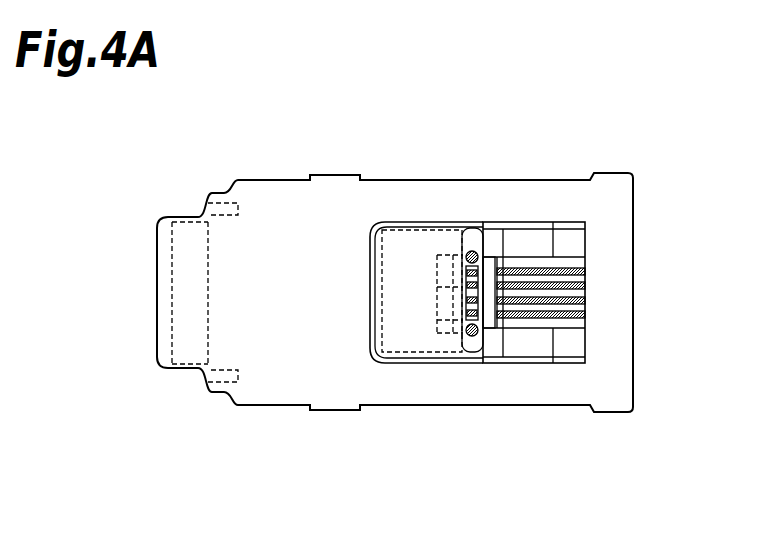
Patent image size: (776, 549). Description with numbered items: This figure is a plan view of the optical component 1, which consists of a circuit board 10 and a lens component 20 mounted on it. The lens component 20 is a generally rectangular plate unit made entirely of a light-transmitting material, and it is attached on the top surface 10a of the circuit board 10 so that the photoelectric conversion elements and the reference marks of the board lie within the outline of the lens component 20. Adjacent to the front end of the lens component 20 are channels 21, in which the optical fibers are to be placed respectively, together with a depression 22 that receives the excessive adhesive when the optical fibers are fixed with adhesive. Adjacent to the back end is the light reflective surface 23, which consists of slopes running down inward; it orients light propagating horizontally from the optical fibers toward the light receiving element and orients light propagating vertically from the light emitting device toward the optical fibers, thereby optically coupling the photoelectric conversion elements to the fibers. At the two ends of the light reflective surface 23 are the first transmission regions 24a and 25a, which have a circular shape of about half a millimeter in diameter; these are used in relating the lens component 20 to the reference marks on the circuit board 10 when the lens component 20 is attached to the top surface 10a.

The optical component 1 is at (567, 124).
The circuit board 10 is at (393, 180).
The top surface 10a is at (277, 192).
The lens component 20 is at (437, 225).
The channels 21 is at (585, 271).
The depression 22 is at (489, 326).
The light reflective surface 23 is at (463, 292).
The first transmission region 24a is at (466, 334).
The first transmission region 25a is at (476, 232).